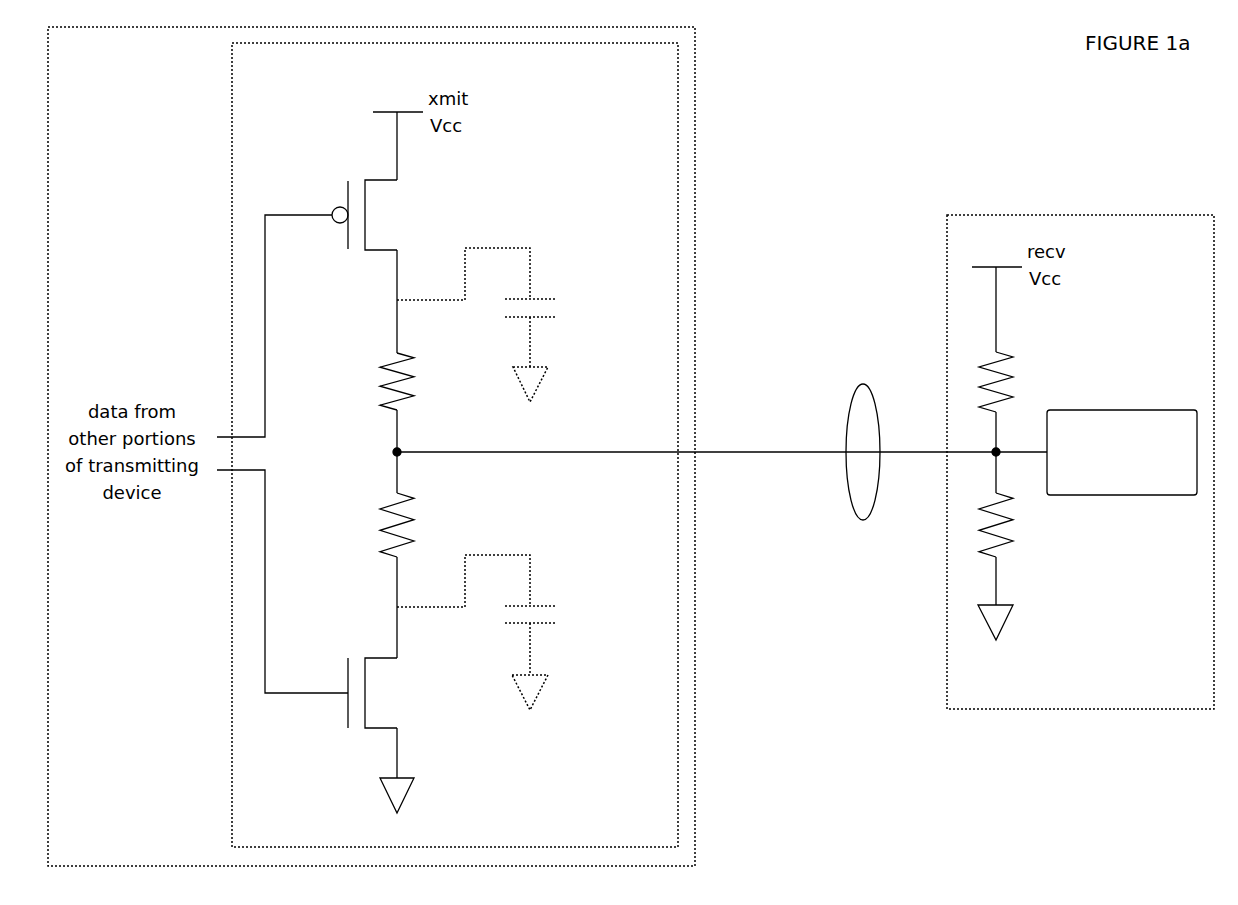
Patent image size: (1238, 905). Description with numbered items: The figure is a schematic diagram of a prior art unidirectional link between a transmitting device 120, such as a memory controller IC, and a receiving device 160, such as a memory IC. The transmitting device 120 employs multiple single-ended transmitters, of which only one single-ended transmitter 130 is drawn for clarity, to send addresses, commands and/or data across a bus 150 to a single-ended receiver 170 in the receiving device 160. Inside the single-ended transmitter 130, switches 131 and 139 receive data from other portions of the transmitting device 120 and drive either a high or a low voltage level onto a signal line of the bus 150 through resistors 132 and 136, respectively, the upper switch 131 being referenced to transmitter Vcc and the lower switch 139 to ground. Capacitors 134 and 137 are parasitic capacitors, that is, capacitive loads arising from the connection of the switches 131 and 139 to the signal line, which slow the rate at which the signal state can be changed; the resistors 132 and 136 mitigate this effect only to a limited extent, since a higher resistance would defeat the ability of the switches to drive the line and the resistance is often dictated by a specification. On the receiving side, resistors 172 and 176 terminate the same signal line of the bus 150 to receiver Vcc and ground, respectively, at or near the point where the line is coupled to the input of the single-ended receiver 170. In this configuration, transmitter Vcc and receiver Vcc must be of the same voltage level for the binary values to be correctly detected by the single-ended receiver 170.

The transmitting device 120 is at (167, 818).
The single-ended transmitter 130 is at (591, 818).
The switch 131 is at (416, 227).
The resistor 132 is at (387, 402).
The parasitic capacitor 134 is at (547, 298).
The resistor 136 is at (387, 512).
The parasitic capacitor 137 is at (547, 606).
The switch 139 is at (414, 704).
The bus 150 is at (863, 383).
The receiving device 160 is at (1164, 697).
The single-ended receiver 170 is at (1141, 490).
The resistor 172 is at (1007, 393).
The resistor 176 is at (1007, 520).